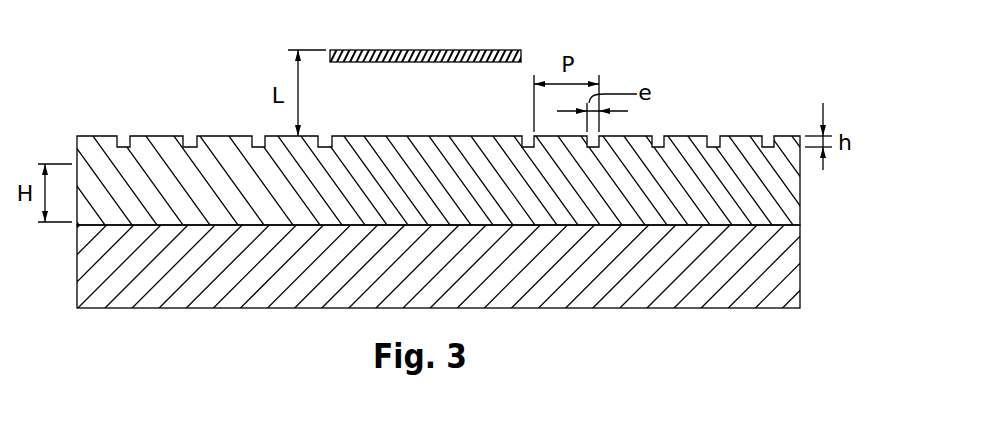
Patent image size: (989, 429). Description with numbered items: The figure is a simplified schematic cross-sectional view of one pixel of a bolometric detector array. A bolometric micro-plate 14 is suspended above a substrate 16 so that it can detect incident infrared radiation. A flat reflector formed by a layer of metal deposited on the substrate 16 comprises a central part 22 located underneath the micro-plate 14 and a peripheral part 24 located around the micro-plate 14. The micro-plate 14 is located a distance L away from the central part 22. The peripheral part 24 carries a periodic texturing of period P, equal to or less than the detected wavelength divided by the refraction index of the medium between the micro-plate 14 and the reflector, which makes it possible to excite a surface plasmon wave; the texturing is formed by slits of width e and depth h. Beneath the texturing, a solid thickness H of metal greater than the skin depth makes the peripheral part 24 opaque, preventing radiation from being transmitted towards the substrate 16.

The bolometric micro-plate 14 is at (477, 50).
The substrate 16 is at (737, 280).
The central part of the reflector 22 is at (472, 136).
The peripheral part of the reflector 24 is at (455, 205).